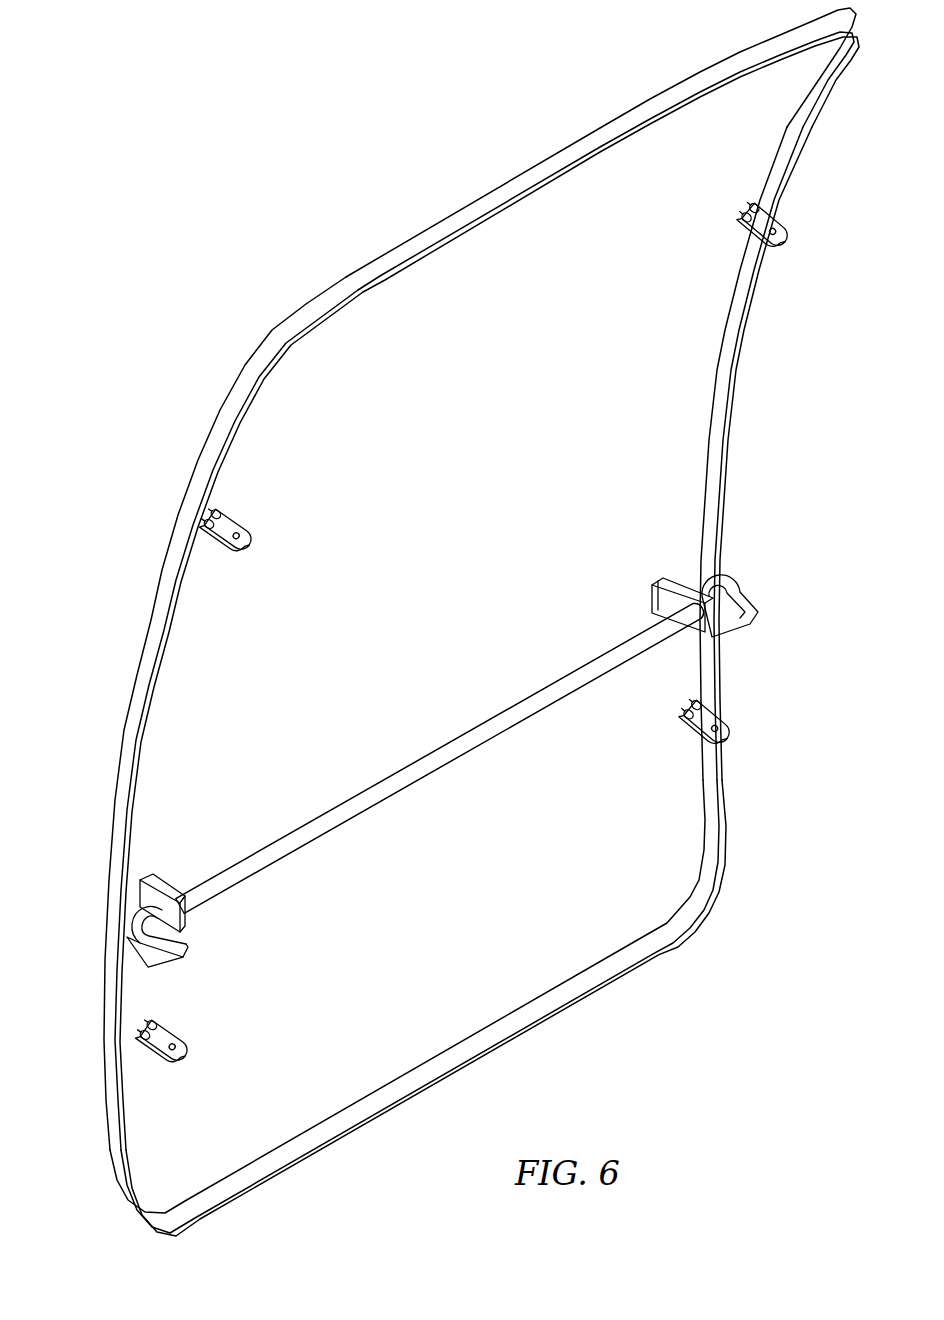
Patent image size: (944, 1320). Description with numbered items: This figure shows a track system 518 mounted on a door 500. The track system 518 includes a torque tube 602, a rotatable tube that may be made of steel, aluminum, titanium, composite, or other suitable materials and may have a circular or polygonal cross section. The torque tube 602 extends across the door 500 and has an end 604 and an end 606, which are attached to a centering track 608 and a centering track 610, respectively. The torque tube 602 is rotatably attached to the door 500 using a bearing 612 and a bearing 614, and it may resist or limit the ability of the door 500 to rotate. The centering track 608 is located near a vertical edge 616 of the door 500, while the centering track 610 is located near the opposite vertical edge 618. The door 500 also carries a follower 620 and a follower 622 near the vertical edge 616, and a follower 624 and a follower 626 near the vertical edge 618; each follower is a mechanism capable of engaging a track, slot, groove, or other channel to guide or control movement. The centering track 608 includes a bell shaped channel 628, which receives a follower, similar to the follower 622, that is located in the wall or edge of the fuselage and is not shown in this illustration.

The door 500 is at (838, 70).
The track system 518 is at (725, 663).
The torque tube 602 is at (385, 788).
The end 604 is at (176, 918).
The end 606 is at (730, 578).
The centering track 608 is at (130, 914).
The centering track 610 is at (745, 598).
The bearing 612 is at (150, 878).
The bearing 614 is at (677, 580).
The vertical edge 616 is at (132, 662).
The vertical edge 618 is at (733, 414).
The follower 620 is at (255, 553).
The follower 622 is at (184, 1050).
The follower 624 is at (743, 225).
The follower 626 is at (720, 717).
The bell shaped channel 628 is at (140, 930).